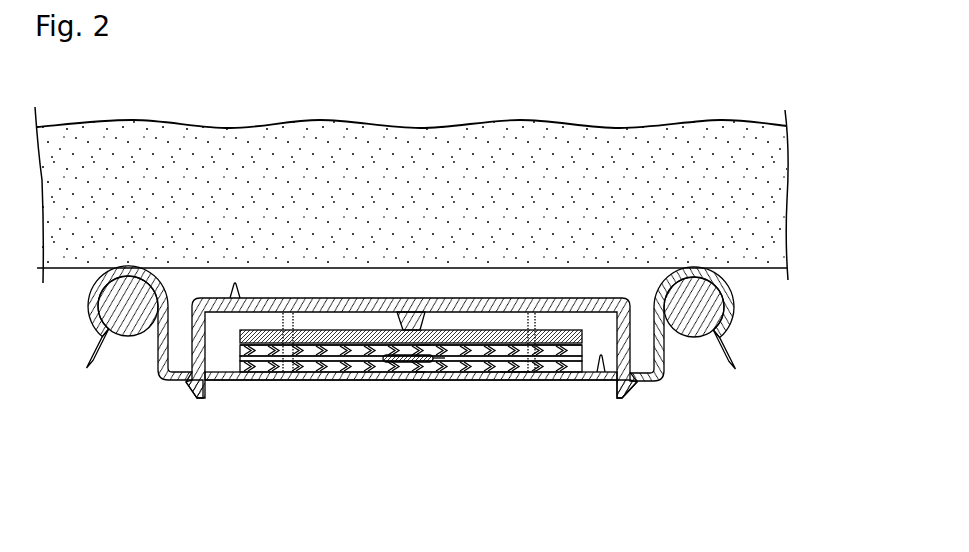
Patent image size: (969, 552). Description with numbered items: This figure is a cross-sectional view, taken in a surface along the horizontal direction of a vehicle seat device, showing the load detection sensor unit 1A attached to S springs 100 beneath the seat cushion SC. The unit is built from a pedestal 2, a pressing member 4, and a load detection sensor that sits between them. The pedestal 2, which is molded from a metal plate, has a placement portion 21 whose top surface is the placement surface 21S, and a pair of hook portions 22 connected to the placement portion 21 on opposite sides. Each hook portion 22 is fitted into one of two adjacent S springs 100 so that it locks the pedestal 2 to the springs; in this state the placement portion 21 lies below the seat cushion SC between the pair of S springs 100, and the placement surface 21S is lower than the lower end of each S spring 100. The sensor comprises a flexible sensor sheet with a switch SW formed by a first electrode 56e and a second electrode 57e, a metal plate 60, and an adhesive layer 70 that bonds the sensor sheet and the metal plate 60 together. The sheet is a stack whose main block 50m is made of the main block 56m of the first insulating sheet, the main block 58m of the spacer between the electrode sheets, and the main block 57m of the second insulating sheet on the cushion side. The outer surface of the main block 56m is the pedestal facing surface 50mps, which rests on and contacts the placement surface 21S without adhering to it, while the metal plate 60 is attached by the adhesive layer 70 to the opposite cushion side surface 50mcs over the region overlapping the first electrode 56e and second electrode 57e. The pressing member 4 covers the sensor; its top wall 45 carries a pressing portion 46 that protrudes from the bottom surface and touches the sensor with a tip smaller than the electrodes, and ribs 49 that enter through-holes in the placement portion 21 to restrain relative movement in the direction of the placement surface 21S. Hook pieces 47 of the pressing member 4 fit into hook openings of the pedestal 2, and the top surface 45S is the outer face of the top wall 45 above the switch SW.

The seat cushion SC is at (168, 157).
The load detection sensor unit 1A is at (126, 442).
The pedestal 2 is at (662, 393).
The hook portion 22 is at (385, 329).
The S spring 100 is at (133, 327).
The pressing member 4 is at (335, 294).
The top wall 45 is at (410, 285).
The pressing portion 46 is at (406, 318).
The top surface 45S is at (233, 285).
The hook piece 47 is at (201, 290).
The placement portion 21 is at (415, 403).
The placement surface 21S is at (614, 381).
The adhesive layer 70 is at (603, 373).
The rib 49 is at (288, 380).
The main block 50m is at (439, 291).
The pedestal facing surface 50mps is at (553, 385).
The cushion side surface 50mcs is at (513, 362).
The main block 57m is at (323, 350).
The main block 58m is at (411, 407).
The main block 56m is at (315, 367).
The second electrode 57e is at (428, 347).
The first electrode 56e is at (419, 372).
The metal plate 60 is at (360, 370).
The switch SW is at (445, 365).